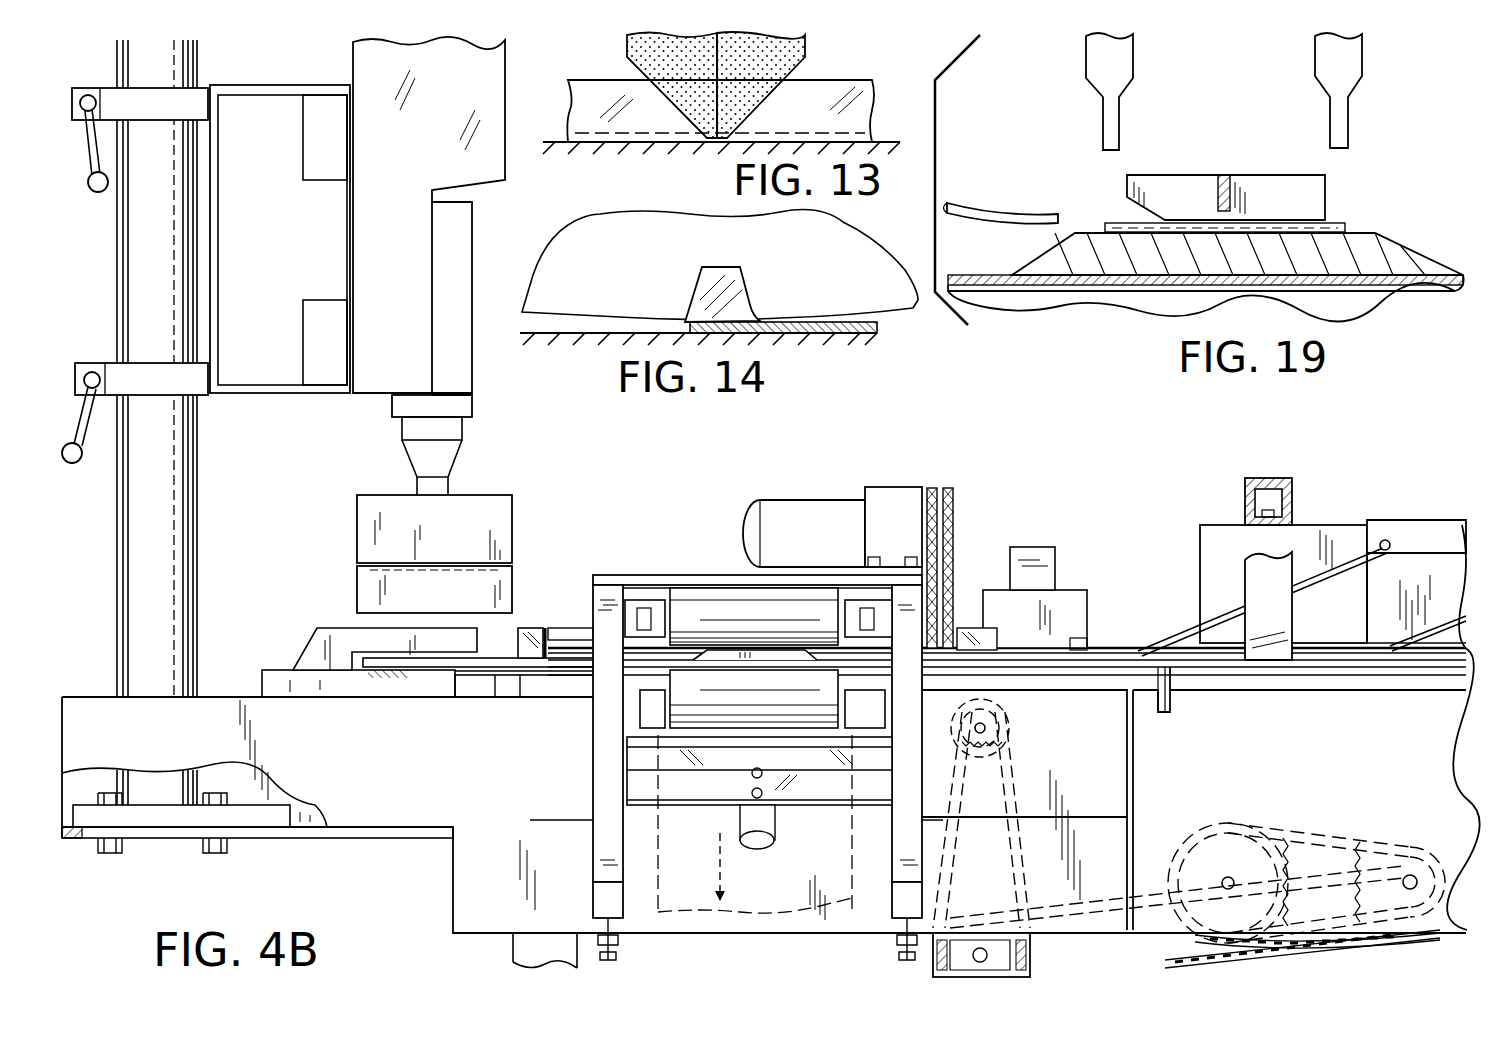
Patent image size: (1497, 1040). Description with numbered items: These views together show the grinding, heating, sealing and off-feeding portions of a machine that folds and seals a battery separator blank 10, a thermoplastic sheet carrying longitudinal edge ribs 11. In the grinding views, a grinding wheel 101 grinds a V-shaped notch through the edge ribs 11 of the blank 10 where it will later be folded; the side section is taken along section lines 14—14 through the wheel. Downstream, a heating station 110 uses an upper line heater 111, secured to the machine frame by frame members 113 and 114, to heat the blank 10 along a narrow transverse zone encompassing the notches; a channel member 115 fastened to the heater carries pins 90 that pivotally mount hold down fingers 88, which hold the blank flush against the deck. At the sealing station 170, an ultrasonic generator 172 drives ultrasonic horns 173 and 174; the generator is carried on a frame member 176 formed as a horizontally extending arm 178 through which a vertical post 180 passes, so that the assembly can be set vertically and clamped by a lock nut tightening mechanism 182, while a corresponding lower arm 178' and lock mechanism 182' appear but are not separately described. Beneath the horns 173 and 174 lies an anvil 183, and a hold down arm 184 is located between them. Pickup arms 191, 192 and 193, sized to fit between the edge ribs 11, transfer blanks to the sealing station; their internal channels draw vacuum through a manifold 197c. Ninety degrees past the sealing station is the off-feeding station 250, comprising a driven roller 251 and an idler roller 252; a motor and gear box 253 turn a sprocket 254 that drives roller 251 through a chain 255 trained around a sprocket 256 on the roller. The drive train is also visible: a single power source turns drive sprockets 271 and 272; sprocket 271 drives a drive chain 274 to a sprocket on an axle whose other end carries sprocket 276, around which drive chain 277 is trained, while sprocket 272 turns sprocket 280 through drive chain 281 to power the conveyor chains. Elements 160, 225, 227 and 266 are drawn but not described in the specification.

In FIG. 13, the battery separator blank 10 is at (885, 83).
In FIG. 14, the battery separator blank 10 is at (794, 337).
In FIG. 19, the battery separator blank 10 is at (1336, 220).
In FIG. 13, the longitudinal edge ribs 11 is at (840, 84).
In FIG. 14, the longitudinal edge ribs 11 is at (748, 292).
In FIG. 13, the section line 14 is at (717, 67).
In FIG. 4B, the hold down fingers 88 is at (1178, 638).
In FIG. 4B, the pins 90 is at (1385, 540).
In FIG. 13, the grinding wheel 101 is at (790, 51).
In FIG. 14, the grinding wheel 101 is at (900, 308).
In FIG. 4B, the heating station 110 is at (1349, 520).
In FIG. 4B, the upper line heater 111 is at (1210, 560).
In FIG. 4B, the frame member 113 is at (1263, 480).
In FIG. 4B, the frame member 114 is at (1253, 590).
In FIG. 4B, the channel member 115 is at (1428, 531).
In FIG. 19, the strip 160 is at (998, 213).
In FIG. 4B, the sealing station 170 is at (330, 77).
In FIG. 4B, the ultrasonic generator 172 is at (458, 232).
In FIG. 19, the ultrasonic horn 173 is at (1115, 57).
In FIG. 4B, the ultrasonic horn 174 is at (502, 512).
In FIG. 19, the ultrasonic horn 174 is at (1330, 50).
In FIG. 4B, the frame member 176 is at (480, 68).
In FIG. 4B, the horizontally extending arm 178 is at (156, 89).
In FIG. 4B, the lower clamp bracket 178' is at (163, 399).
In FIG. 4B, the vertical post 180 is at (183, 520).
In FIG. 4B, the lock nut tightening mechanism 182 is at (82, 125).
In FIG. 4B, the lower clamp handle 182' is at (85, 397).
In FIG. 19, the anvil 183 is at (1392, 247).
In FIG. 4B, the hold down arm 184 is at (345, 642).
In FIG. 19, the hold down arm 184 is at (1260, 188).
In FIG. 4B, the pickup arm 191 is at (495, 658).
In FIG. 4B, the pickup arm 192 is at (742, 657).
In FIG. 4B, the pickup arm 193 is at (1120, 656).
In FIG. 4B, the pickup arm manifold 197c is at (530, 640).
In FIG. 4B, the drive sprocket 225 is at (986, 725).
In FIG. 4B, the sprocket teeth 227 is at (980, 748).
In FIG. 4B, the off-feeding station 250 is at (684, 551).
In FIG. 4B, the driven roller 251 is at (690, 603).
In FIG. 4B, the idler roller 252 is at (770, 702).
In FIG. 4B, the gear box 253 is at (800, 512).
In FIG. 4B, the sprocket 254 is at (954, 496).
In FIG. 4B, the chain 255 is at (953, 560).
In FIG. 4B, the sprocket 256 is at (953, 593).
In FIG. 4B, the guard 266 is at (788, 908).
In FIG. 4B, the drive sprocket 271 is at (1350, 888).
In FIG. 4B, the drive sprocket 272 is at (1398, 878).
In FIG. 4B, the drive chain 274 is at (1113, 892).
In FIG. 4B, the sprocket 276 is at (1030, 963).
In FIG. 4B, the drive chain 277 is at (1020, 792).
In FIG. 4B, the sprocket 280 is at (1200, 938).
In FIG. 4B, the drive chain 281 is at (1292, 937).